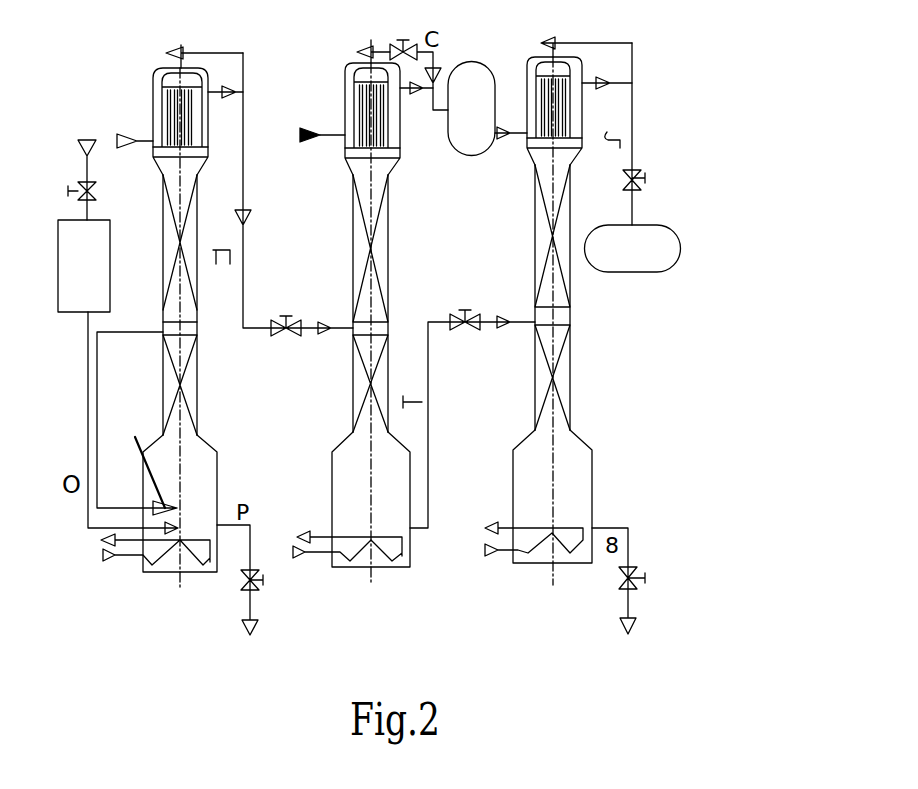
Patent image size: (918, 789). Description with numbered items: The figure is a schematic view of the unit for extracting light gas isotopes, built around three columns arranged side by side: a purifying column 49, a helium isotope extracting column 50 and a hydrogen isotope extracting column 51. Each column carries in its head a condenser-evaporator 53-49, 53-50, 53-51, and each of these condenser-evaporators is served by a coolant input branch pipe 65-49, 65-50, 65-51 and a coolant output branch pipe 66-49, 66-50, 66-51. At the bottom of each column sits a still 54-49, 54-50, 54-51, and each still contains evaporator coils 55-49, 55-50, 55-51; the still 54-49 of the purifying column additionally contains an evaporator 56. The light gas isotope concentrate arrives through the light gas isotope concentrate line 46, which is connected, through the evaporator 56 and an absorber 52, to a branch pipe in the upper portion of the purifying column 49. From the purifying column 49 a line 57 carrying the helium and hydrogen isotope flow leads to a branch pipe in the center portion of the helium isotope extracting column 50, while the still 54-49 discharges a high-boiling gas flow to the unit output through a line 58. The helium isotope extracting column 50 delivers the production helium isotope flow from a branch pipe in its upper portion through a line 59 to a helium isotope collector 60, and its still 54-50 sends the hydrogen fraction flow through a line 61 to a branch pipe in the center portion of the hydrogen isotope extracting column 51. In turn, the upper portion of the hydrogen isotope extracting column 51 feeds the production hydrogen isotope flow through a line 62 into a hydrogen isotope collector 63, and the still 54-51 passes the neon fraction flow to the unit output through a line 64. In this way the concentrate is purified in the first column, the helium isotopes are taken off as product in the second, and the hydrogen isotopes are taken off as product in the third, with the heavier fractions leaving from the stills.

The light gas isotope concentrate line 46 is at (87, 143).
The purifying column 49 is at (195, 387).
The helium isotope extracting column 50 is at (385, 265).
The hydrogen isotope extracting column 51 is at (563, 383).
The absorber 52 is at (75, 300).
The condenser-evaporator 53-49 is at (158, 115).
The condenser-evaporator 53-50 is at (350, 127).
The condenser-evaporator 53-51 is at (572, 118).
The still 54-49 is at (198, 472).
The still 54-50 is at (345, 502).
The still 54-51 is at (575, 490).
The evaporator coils 55-49 is at (145, 565).
The evaporator coils 55-50 is at (360, 563).
The evaporator coils 55-51 is at (525, 553).
The evaporator 56 is at (139, 459).
The line of a helium and hydrogen isotope flow 57 is at (245, 280).
The line of a high-boiling gas flow 58 is at (255, 600).
The line of a production helium isotope flow 59 is at (434, 62).
The helium isotope collector 60 is at (480, 135).
The line of a hydrogen fraction flow 61 is at (469, 419).
The line of a production hydrogen isotope flow 62 is at (634, 128).
The hydrogen isotope collector 63 is at (622, 252).
The line of a neon fraction flow 64 is at (618, 527).
The coolant input branch pipe 65-49 is at (120, 147).
The coolant input branch pipe 65-50 is at (300, 137).
The coolant input branch pipe 65-51 is at (505, 127).
The coolant output branch pipe 66-49 is at (278, 80).
The coolant output branch pipe 66-50 is at (415, 92).
The coolant output branch pipe 66-51 is at (610, 84).